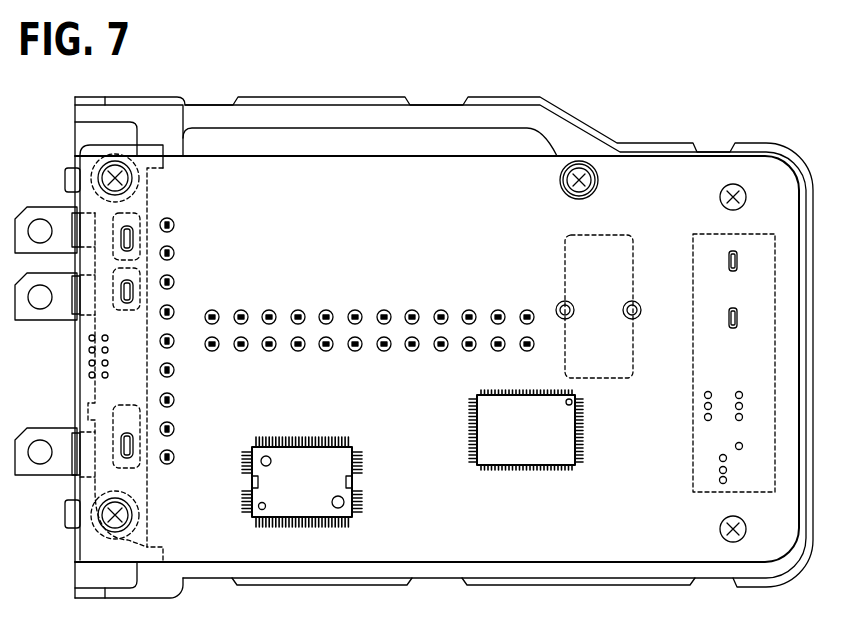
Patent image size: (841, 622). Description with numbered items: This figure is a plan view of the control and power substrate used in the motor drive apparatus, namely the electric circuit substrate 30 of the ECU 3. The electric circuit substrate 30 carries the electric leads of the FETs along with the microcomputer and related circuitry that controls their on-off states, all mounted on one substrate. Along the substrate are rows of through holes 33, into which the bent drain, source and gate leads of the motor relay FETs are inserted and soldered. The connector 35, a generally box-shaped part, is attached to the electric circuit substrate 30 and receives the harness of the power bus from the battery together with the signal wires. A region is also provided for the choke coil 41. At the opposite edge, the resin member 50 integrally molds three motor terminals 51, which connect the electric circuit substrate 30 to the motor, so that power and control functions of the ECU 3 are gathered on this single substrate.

The ECU 3 is at (757, 108).
The electric circuit substrate 30 is at (438, 148).
The through holes 33 is at (178, 224).
The connector 35 is at (707, 253).
The choke coil 41 is at (607, 258).
The resin member 50 is at (87, 416).
The motor terminals 51 is at (27, 253).